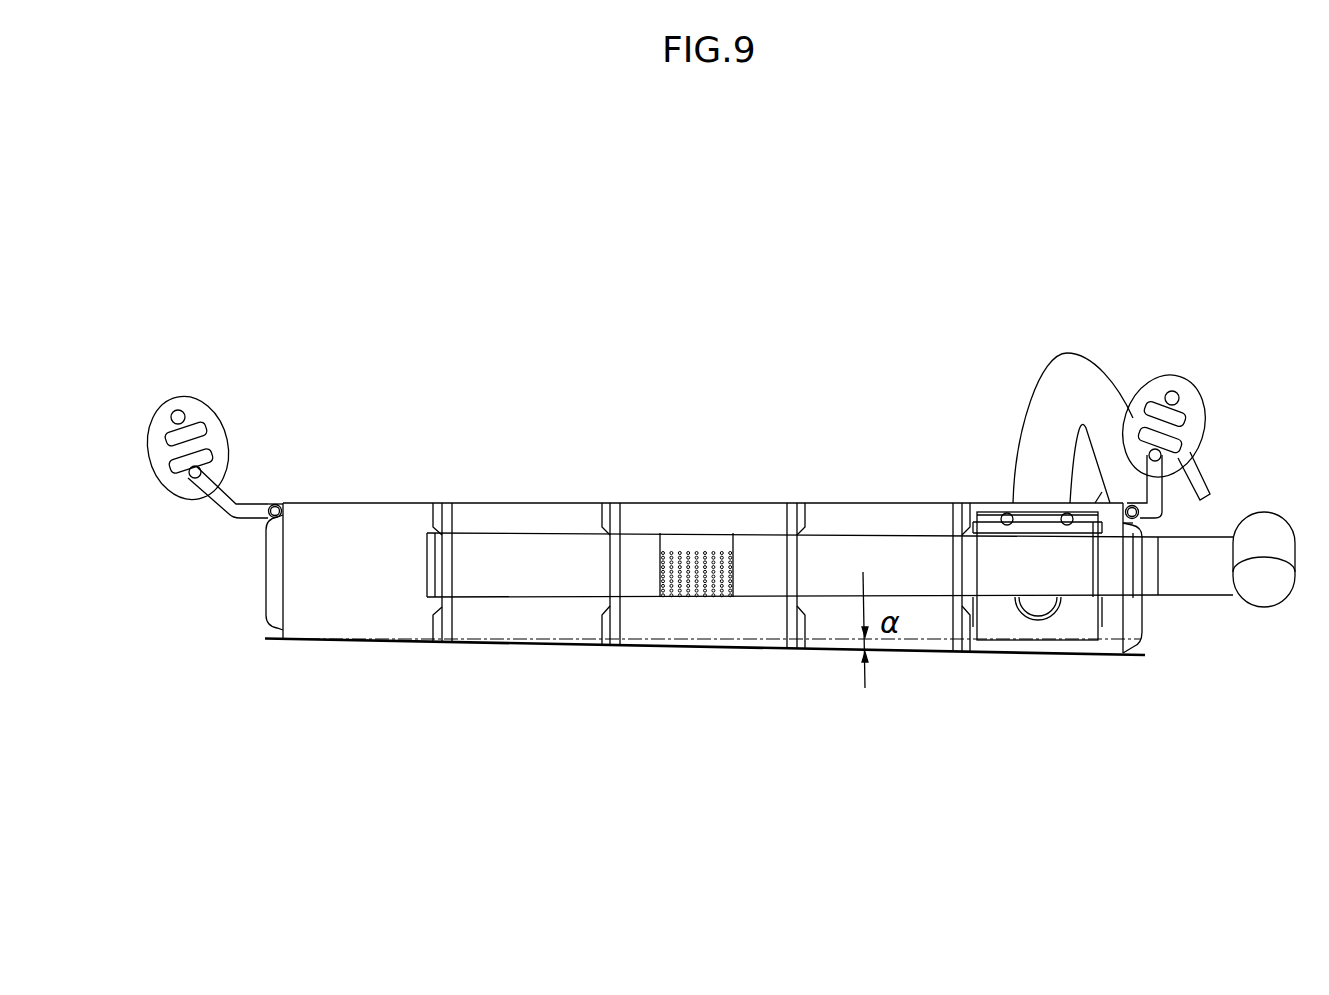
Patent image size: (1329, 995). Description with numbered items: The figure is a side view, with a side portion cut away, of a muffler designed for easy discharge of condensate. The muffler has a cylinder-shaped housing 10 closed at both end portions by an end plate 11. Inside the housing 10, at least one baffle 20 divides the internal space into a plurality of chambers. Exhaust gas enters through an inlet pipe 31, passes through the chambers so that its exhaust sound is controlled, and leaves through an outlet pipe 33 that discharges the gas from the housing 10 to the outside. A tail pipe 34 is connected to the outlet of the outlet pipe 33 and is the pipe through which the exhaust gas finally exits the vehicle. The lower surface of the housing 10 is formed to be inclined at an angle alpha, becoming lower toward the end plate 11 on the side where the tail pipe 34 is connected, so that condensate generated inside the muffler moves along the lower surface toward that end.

The housing 10 is at (375, 503).
The end plate 11 is at (272, 582).
The baffle 20 is at (613, 503).
The inlet pipe 31 is at (1040, 410).
The outlet pipe 33 is at (530, 583).
The tail pipe 34 is at (1217, 580).